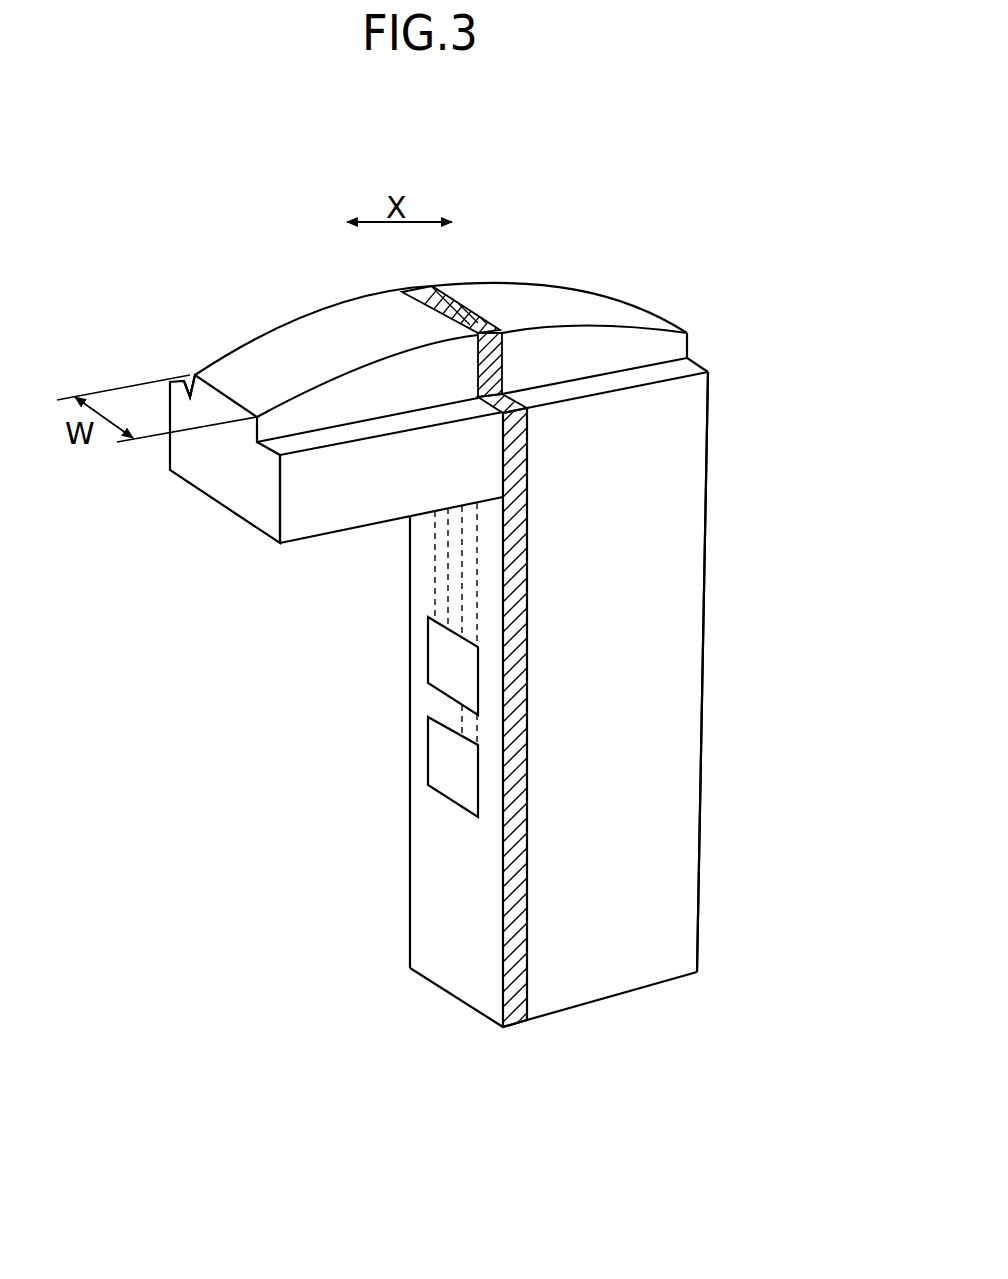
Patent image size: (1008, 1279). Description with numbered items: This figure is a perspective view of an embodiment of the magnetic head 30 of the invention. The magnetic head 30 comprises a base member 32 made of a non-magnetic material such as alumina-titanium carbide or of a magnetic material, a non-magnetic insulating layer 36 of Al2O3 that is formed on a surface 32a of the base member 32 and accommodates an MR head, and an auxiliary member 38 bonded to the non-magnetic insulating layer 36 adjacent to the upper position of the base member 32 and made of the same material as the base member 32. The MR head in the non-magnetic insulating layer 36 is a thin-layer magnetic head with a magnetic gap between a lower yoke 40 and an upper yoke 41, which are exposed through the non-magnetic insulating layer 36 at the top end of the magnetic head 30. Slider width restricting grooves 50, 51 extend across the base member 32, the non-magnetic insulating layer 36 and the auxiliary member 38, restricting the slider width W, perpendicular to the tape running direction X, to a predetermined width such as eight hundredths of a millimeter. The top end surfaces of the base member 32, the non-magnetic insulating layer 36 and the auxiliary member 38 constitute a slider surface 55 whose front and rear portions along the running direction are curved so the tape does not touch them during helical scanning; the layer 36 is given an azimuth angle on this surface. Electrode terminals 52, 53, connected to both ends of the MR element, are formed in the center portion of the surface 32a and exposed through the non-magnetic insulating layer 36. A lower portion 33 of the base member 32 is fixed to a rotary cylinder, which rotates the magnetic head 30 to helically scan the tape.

The magnetic head 30 is at (317, 308).
The base member 32 is at (687, 577).
The surface of the base member 32a is at (512, 995).
The lower portion of the base member 33 is at (663, 913).
The non-magnetic insulating layer 36 is at (528, 543).
The auxiliary member 38 is at (308, 497).
The lower yoke 40 is at (453, 285).
The upper yoke 41 is at (538, 318).
The slider width restricting groove 50 is at (285, 443).
The slider width restricting groove 51 is at (183, 378).
The electrode terminal 52 is at (447, 670).
The electrode terminal 53 is at (452, 762).
The slider surface 55 is at (533, 303).